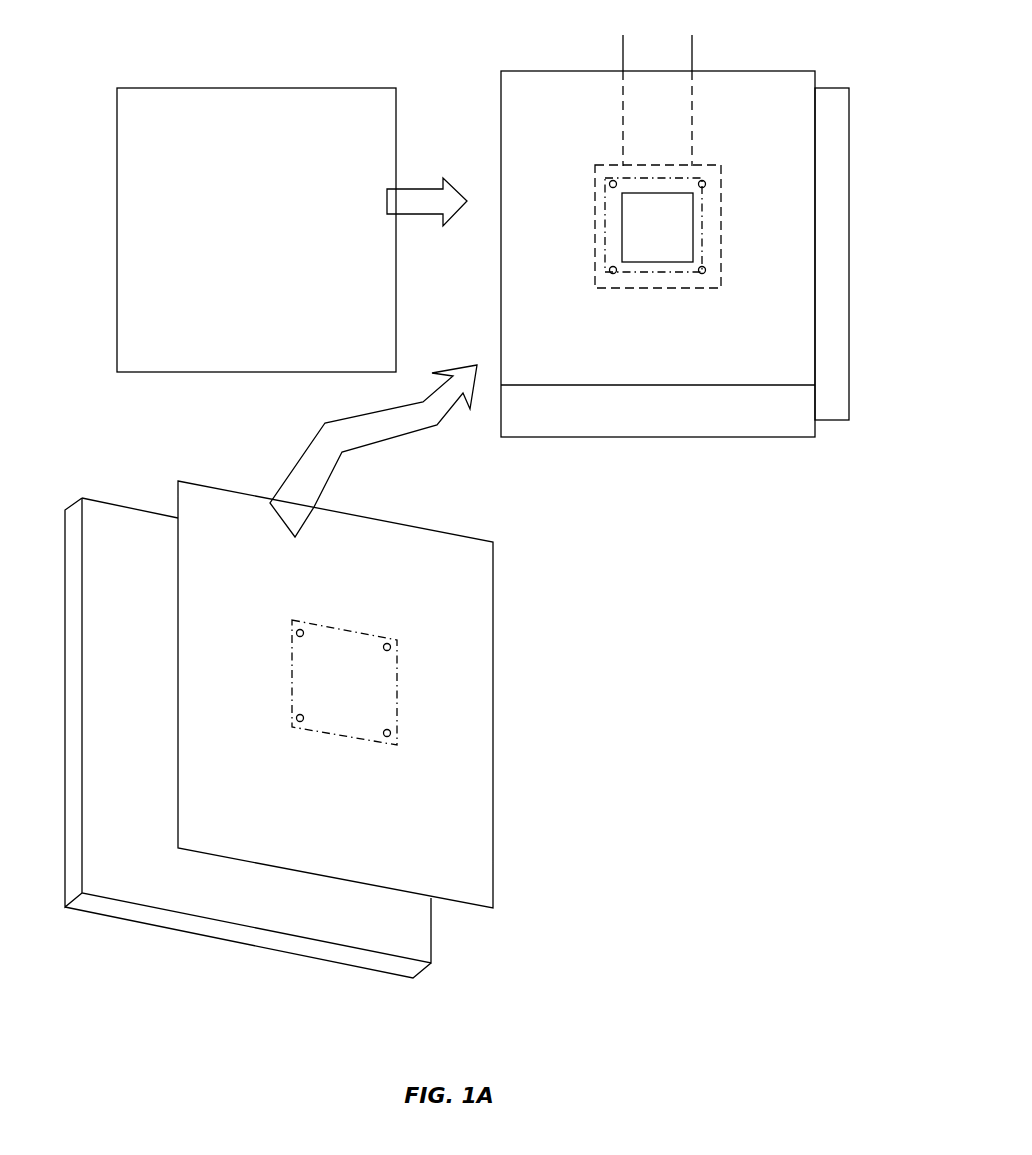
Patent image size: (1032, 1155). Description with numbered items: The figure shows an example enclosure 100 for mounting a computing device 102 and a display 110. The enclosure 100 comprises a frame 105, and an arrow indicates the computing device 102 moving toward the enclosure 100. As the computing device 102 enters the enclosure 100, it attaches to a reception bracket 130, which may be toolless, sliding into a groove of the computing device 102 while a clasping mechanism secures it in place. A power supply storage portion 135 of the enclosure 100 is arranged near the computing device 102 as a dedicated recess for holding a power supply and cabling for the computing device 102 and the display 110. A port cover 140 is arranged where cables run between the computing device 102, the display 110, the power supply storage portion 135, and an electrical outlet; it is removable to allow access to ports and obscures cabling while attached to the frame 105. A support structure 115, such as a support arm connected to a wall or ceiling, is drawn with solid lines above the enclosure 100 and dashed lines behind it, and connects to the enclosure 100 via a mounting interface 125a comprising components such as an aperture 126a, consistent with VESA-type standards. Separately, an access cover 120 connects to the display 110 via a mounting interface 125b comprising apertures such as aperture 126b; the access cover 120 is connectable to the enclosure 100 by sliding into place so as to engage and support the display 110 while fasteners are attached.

The enclosure 100 is at (481, 64).
The computing device 102 is at (292, 230).
The frame 105 is at (795, 71).
The display 110 is at (103, 500).
The support structure 115 is at (623, 55).
The access cover 120 is at (493, 612).
The mounting interface 125a is at (705, 228).
The mounting interface 125b is at (378, 743).
The aperture 126a is at (697, 275).
The aperture 126b is at (392, 640).
The reception bracket 130 is at (657, 227).
The power supply storage portion 135 is at (658, 404).
The port cover 140 is at (837, 410).